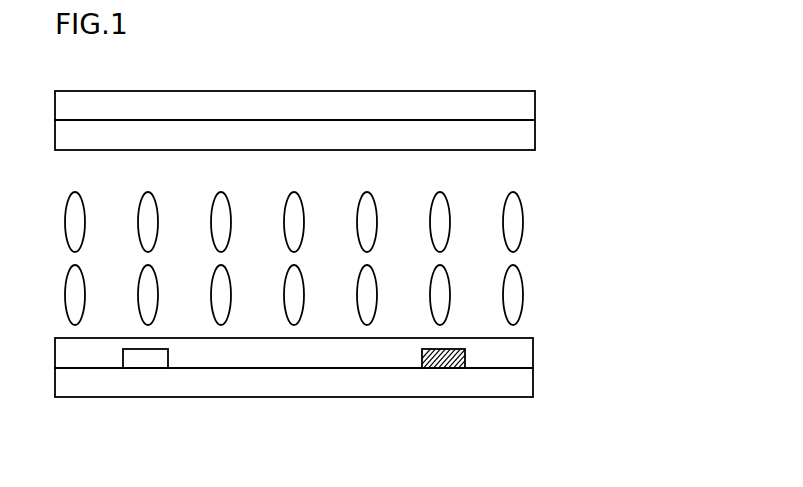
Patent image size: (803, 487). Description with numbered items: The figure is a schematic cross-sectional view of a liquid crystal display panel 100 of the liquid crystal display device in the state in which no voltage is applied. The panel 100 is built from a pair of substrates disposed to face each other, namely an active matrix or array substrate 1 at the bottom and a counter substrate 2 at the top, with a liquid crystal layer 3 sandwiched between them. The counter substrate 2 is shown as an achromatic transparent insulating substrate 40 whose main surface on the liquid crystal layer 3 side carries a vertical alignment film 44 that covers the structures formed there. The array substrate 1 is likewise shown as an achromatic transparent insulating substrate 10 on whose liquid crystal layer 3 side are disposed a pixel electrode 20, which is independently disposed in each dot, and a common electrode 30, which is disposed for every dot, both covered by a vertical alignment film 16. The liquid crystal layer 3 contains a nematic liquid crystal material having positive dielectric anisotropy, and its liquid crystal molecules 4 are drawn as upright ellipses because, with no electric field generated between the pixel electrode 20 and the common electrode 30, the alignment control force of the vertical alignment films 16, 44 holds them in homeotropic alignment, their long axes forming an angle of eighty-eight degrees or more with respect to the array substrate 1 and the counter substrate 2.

The liquid crystal display panel 100 is at (713, 92).
The active matrix substrate 1 is at (342, 390).
The counter substrate 2 is at (341, 120).
The liquid crystal layer 3 is at (346, 246).
The liquid crystal molecules 4 is at (513, 231).
The achromatic transparent insulating substrate 10 is at (526, 390).
The vertical alignment film 16 is at (526, 359).
The pixel electrode 20 is at (443, 365).
The common electrode 30 is at (148, 360).
The achromatic transparent insulating substrate 40 is at (527, 113).
The vertical alignment film 44 is at (527, 145).